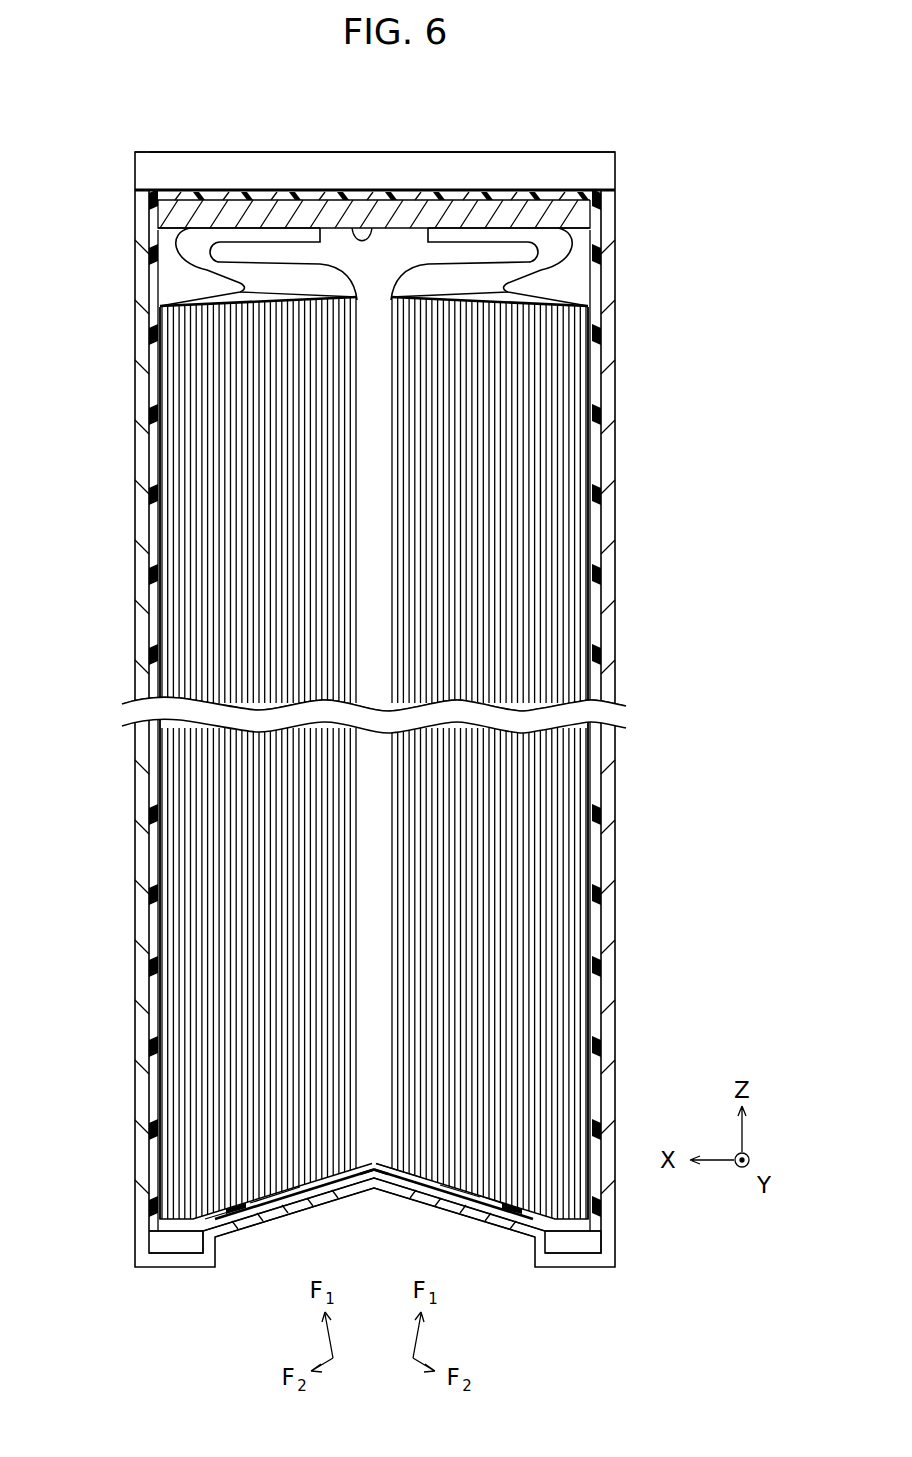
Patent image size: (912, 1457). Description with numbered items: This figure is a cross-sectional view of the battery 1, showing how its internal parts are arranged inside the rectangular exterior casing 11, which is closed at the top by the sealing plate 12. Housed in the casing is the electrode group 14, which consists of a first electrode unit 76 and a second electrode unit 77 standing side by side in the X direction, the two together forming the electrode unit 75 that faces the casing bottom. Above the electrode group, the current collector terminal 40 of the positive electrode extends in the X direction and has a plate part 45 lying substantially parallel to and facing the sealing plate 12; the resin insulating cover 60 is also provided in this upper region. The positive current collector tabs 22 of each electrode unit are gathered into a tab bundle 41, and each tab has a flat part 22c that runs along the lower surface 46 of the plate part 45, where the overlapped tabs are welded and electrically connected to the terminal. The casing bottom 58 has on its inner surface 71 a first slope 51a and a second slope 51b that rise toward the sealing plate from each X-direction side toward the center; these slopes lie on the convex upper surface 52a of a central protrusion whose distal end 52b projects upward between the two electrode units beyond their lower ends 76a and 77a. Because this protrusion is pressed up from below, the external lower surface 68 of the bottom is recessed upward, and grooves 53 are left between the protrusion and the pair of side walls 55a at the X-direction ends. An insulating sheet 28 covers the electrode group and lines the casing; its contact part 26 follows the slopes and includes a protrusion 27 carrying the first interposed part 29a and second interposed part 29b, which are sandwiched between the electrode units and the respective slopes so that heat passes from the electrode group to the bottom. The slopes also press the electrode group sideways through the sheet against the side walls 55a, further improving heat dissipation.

The battery 1 is at (409, 106).
The exterior casing 11 is at (148, 245).
The sealing plate 12 is at (541, 156).
The electrode group 14 is at (188, 520).
The current collector tab 22 is at (224, 246).
The flat part 22c is at (298, 233).
The contact part 26 is at (331, 1183).
The protrusion 27 is at (392, 1160).
The insulating sheet 28 is at (366, 1173).
The first interposed part 29a is at (300, 1177).
The second interposed part 29b is at (500, 1195).
The current collector terminal 40 is at (263, 215).
The tab bundle 41 is at (318, 285).
The plate part 45 is at (236, 280).
The lower surface 46 is at (366, 228).
The first slope 51a is at (313, 1170).
The second slope 51b is at (565, 1222).
The upper surface 52a is at (450, 1182).
The distal end 52b is at (415, 1165).
The groove 53 is at (160, 1240).
The side wall 55a is at (140, 823).
The bottom 58 is at (240, 1223).
The insulating cover 60 is at (581, 194).
The lower surface 68 is at (380, 1175).
The inner surface 71 is at (270, 1190).
The electrode unit 75 is at (174, 410).
The first electrode unit 76 is at (190, 608).
The lower end 76a is at (173, 1233).
The second electrode unit 77 is at (570, 387).
The lower end 77a is at (577, 1233).